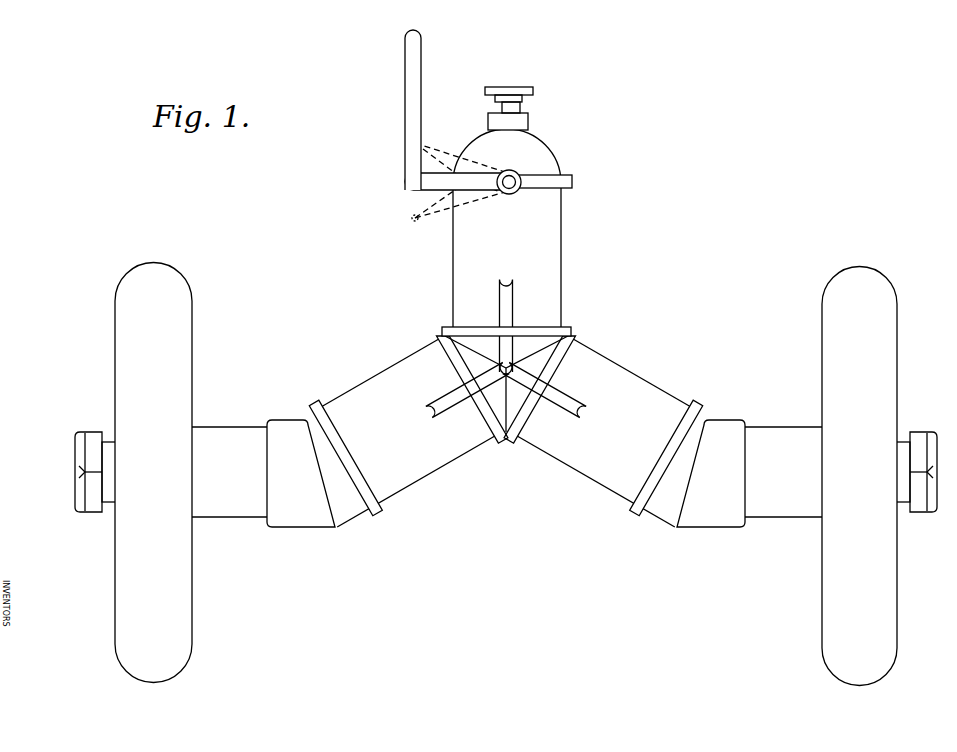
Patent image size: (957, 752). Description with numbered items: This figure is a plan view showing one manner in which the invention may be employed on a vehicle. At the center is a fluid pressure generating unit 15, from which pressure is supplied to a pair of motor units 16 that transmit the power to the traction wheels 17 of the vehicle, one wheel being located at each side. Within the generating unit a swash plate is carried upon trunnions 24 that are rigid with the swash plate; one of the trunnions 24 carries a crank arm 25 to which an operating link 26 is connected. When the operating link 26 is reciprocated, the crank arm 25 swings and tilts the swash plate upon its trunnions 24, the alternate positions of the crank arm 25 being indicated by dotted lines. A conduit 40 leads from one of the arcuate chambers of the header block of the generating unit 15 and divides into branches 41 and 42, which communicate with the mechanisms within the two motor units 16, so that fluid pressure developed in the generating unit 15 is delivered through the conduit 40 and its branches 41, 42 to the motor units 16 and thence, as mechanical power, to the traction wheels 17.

The fluid pressure generating unit 15 is at (557, 223).
The motor units 16 is at (395, 373).
The traction wheels 17 is at (182, 320).
The trunnions 24 is at (515, 179).
The crank arm 25 is at (423, 184).
The operating link 26 is at (405, 86).
The conduit 40 is at (511, 303).
The branch 41 is at (438, 398).
The branch 42 is at (572, 405).